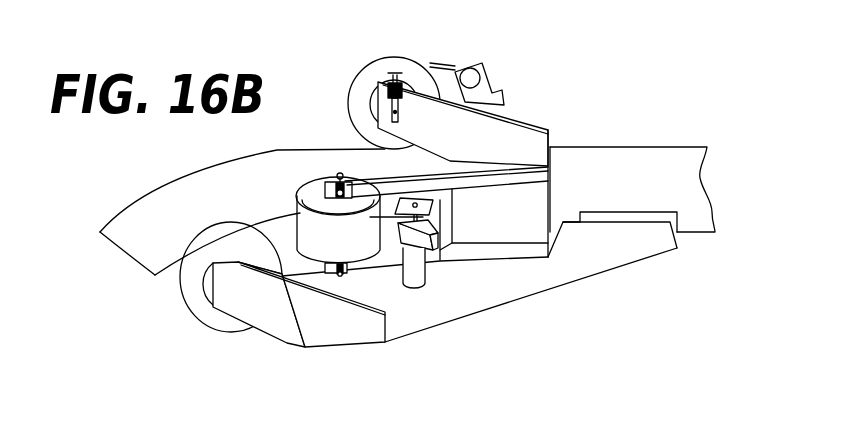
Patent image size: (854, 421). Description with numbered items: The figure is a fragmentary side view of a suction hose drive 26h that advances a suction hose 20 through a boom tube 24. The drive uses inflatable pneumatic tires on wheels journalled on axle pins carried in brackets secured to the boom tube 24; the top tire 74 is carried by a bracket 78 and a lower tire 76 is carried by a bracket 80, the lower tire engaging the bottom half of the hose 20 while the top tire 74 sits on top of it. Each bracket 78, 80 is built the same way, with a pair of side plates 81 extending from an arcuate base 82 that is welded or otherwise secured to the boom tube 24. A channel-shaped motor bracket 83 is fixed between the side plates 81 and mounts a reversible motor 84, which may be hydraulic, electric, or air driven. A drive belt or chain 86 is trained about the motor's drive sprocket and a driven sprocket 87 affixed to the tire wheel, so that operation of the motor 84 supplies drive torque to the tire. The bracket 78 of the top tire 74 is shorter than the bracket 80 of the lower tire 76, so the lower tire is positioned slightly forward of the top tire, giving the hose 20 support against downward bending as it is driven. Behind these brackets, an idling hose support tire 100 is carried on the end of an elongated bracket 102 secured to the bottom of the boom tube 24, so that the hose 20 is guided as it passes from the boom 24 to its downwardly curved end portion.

The suction hose 20 is at (163, 200).
The boom tube 24 is at (620, 158).
The suction hose drive 26h is at (518, 65).
The tire 74 is at (366, 69).
The tire 76 is at (350, 253).
The bracket 78 is at (526, 118).
The bracket 80 is at (495, 272).
The side plates 81 is at (485, 143).
The arcuate base 82 is at (543, 241).
The motor bracket 83 is at (453, 201).
The motor 84 is at (421, 282).
The drive belt or chain 86 is at (366, 250).
The driven sprocket 87 is at (313, 192).
The idling hose support tire 100 is at (200, 314).
The elongated bracket 102 is at (467, 313).